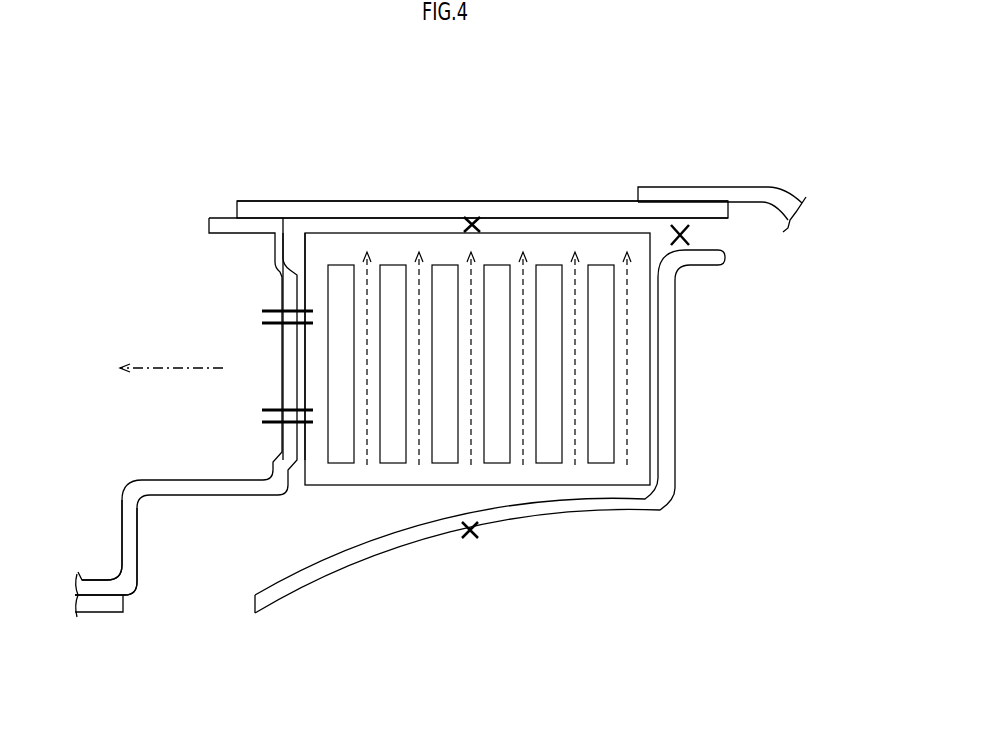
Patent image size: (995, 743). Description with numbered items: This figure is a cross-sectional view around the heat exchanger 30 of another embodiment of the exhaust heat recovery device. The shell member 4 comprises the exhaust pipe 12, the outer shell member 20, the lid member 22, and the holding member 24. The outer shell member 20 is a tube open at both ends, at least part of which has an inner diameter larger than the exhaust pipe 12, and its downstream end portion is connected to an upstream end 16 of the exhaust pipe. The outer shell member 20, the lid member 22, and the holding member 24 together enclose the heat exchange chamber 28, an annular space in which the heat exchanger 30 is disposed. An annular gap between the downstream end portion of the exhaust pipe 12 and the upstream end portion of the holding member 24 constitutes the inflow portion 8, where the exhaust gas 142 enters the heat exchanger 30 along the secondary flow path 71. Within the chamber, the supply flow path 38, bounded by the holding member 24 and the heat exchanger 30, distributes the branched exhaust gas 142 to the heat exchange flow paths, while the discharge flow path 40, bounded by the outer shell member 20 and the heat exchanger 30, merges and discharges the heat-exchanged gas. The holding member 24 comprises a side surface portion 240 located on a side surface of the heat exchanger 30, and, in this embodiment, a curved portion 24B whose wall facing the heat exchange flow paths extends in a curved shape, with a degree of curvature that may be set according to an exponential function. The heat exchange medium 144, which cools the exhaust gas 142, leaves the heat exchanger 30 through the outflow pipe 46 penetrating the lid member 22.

The shell member 4 is at (242, 174).
The inflow portion 8 is at (184, 605).
The exhaust pipe 12 is at (100, 604).
The upstream end 16 is at (643, 177).
The outer shell member 20 is at (335, 199).
The lid member 22 is at (275, 252).
The holding member 24 is at (540, 434).
The curved portion 24B is at (555, 553).
The heat exchange chamber 28 is at (403, 198).
The heat exchanger 30 is at (552, 233).
The supply flow path 38 is at (470, 534).
The discharge flow path 40 is at (473, 218).
The outflow pipe 46 is at (267, 322).
The secondary flow path 71 is at (680, 225).
The exhaust gas 142 is at (370, 322).
The heat exchange medium 144 is at (171, 351).
The side surface portion 240 is at (667, 385).